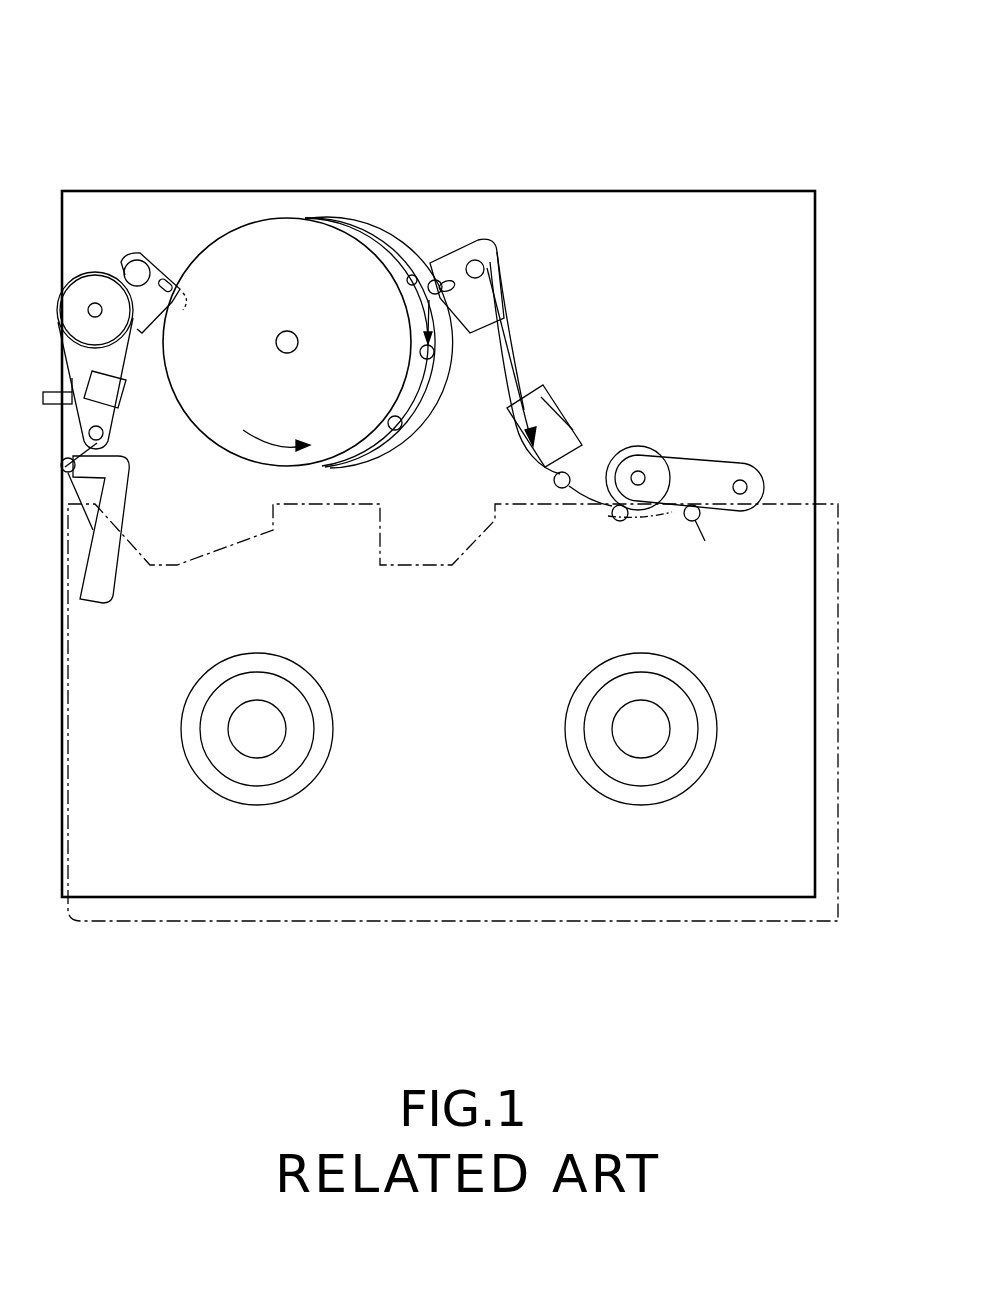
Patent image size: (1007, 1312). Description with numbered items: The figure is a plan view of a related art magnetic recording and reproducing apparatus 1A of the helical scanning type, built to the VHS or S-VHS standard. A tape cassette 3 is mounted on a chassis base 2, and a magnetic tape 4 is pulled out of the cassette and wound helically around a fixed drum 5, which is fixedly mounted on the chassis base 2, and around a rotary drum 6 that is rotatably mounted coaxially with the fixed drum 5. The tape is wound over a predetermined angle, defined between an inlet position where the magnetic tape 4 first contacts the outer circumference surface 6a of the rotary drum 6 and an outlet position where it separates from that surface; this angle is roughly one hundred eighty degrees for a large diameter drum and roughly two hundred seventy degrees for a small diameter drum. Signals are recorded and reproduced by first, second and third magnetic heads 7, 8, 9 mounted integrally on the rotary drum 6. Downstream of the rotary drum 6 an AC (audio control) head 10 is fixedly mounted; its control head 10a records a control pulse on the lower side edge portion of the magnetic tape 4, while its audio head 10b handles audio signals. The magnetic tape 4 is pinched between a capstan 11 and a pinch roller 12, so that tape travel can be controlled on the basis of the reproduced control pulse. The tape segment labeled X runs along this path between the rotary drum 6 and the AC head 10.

The magnetic recording and reproducing apparatus 1A is at (131, 37).
The chassis base 2 is at (673, 215).
The tape cassette 3 is at (233, 921).
The magnetic tape 4 is at (64, 470).
The fixed drum 5 is at (398, 234).
The rotary drum 6 is at (352, 232).
The outer circumference surface 6a is at (305, 218).
The first magnetic head 7 is at (434, 356).
The second magnetic head 8 is at (398, 432).
The third magnetic head 9 is at (436, 280).
The AC (audio control) head 10 is at (608, 405).
The control head 10a is at (568, 444).
The audio head 10b is at (548, 408).
The capstan 11 is at (618, 521).
The pinch roller 12 is at (652, 447).
The tape segment X is at (512, 355).